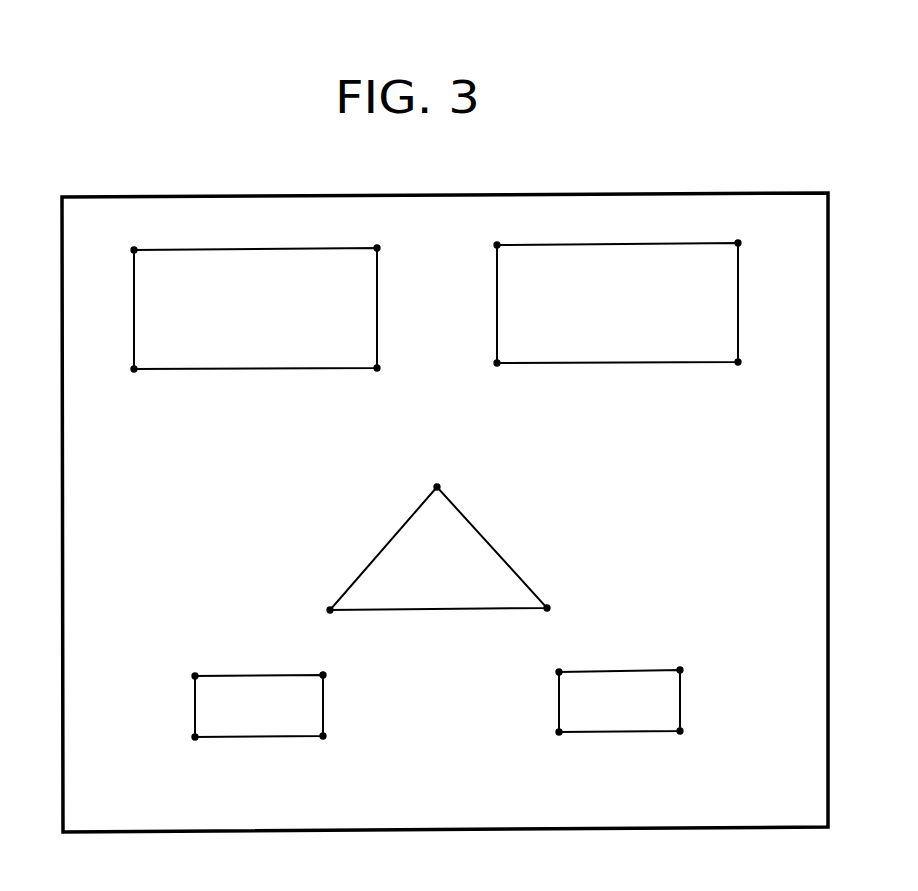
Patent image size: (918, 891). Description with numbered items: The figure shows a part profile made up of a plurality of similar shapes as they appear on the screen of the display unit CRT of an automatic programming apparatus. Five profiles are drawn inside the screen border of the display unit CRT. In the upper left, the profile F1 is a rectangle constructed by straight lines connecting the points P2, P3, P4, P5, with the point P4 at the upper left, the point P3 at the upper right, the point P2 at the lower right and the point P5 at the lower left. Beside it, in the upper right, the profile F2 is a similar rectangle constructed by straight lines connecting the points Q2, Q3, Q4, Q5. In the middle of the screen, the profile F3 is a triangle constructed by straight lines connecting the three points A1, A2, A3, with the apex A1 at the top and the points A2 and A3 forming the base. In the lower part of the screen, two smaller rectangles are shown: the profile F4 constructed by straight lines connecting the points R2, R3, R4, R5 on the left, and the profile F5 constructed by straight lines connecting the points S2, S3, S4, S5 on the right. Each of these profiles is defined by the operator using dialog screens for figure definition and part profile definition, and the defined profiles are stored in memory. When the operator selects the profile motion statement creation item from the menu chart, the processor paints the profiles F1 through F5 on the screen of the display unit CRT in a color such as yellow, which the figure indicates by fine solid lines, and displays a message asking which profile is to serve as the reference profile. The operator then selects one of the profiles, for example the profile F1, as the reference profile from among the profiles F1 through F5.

The display unit CRT is at (740, 813).
The profile F1 is at (257, 318).
The profile F2 is at (619, 318).
The profile F3 is at (442, 540).
The profile F4 is at (260, 728).
The profile F5 is at (621, 723).
The point P2 is at (393, 372).
The point P3 is at (386, 234).
The point P4 is at (119, 236).
The point P5 is at (119, 374).
The point Q2 is at (757, 367).
The point Q3 is at (757, 235).
The point Q4 is at (480, 237).
The point Q5 is at (480, 369).
The point A1 is at (442, 473).
The point A2 is at (315, 610).
The point A3 is at (565, 609).
The point R2 is at (339, 740).
The point R3 is at (339, 673).
The point R4 is at (180, 675).
The point R5 is at (180, 742).
The point S2 is at (698, 730).
The point S3 is at (698, 667).
The point S4 is at (542, 669).
The point S5 is at (542, 732).